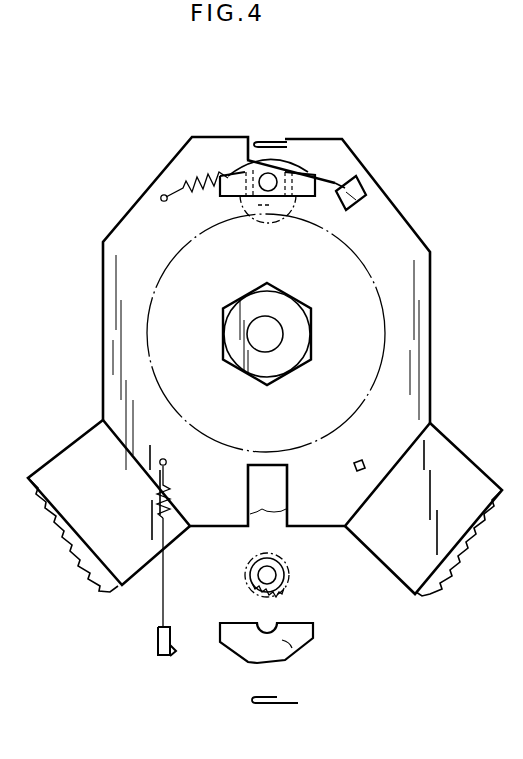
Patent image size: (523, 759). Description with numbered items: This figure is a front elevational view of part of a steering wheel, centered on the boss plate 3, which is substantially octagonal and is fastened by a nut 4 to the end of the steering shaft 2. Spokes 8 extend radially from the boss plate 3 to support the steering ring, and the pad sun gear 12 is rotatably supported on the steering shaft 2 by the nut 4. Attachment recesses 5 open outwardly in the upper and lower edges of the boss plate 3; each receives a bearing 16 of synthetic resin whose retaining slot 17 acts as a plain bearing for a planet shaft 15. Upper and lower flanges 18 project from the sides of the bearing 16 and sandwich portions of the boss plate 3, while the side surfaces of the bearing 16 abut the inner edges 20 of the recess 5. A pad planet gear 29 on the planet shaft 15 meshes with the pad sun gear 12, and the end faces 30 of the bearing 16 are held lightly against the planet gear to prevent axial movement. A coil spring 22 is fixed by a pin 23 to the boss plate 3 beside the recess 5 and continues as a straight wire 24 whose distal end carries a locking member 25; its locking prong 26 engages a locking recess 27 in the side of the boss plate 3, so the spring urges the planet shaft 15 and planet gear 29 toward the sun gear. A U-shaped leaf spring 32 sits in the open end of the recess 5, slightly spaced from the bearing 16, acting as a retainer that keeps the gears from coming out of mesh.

The steering shaft 2 is at (272, 336).
The boss plate 3 is at (432, 290).
The nut 4 is at (232, 322).
The attachment recess 5 is at (266, 208).
The spoke 8 is at (75, 449).
The pad sun gear 12 is at (380, 288).
The planet shaft 15 is at (258, 176).
The bearing 16 is at (303, 170).
The retaining slot 17 is at (264, 622).
The flange 18 is at (222, 193).
The inner edge 20 is at (268, 524).
The coil spring 22 is at (210, 180).
The pin 23 is at (163, 195).
The straight wire 24 is at (325, 180).
The locking member 25 is at (352, 184).
The locking prong 26 is at (172, 658).
The locking recess 27 is at (362, 461).
The pad planet gear 29 is at (290, 208).
The end face 30 is at (286, 648).
The leaf spring 32 is at (268, 139).